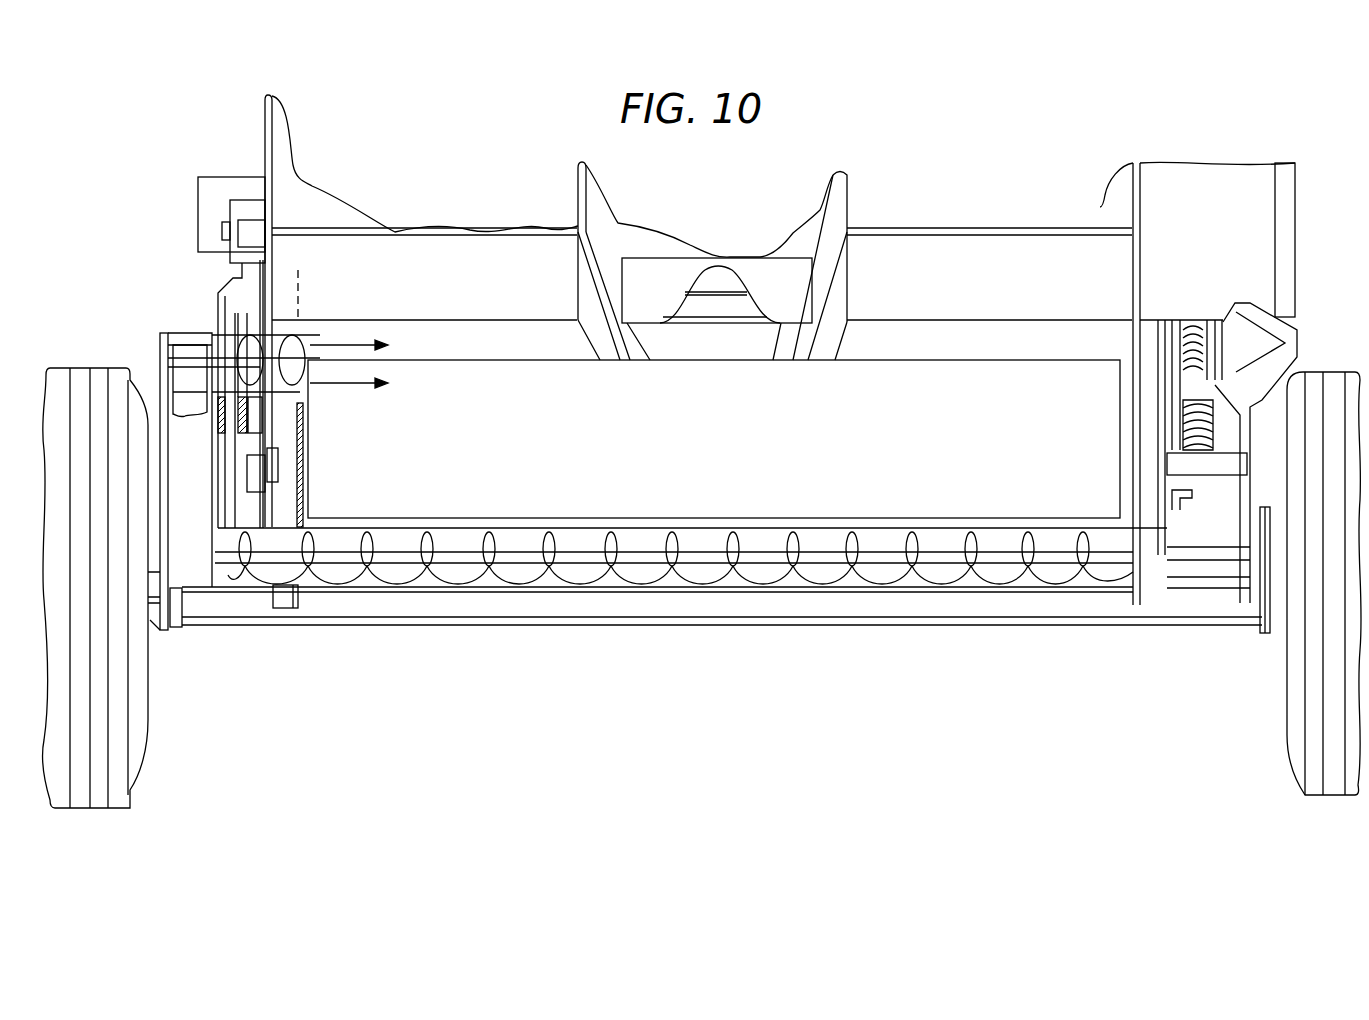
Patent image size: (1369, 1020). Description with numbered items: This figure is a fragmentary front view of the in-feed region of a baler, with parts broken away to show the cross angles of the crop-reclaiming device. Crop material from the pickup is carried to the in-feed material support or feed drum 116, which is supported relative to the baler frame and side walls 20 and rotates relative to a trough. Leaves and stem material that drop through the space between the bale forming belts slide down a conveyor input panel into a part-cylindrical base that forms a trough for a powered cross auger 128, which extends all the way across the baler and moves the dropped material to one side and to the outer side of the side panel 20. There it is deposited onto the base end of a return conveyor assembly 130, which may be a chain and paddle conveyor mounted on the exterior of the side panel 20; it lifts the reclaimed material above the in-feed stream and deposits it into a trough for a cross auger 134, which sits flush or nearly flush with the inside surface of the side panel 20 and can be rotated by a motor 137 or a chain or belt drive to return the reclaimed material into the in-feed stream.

The side wall 20 is at (305, 467).
The feed drum 116 is at (882, 459).
The cross auger 128 is at (855, 575).
The return conveyor assembly 130 is at (168, 355).
The cross auger 134 is at (243, 325).
The motor 137 is at (340, 343).